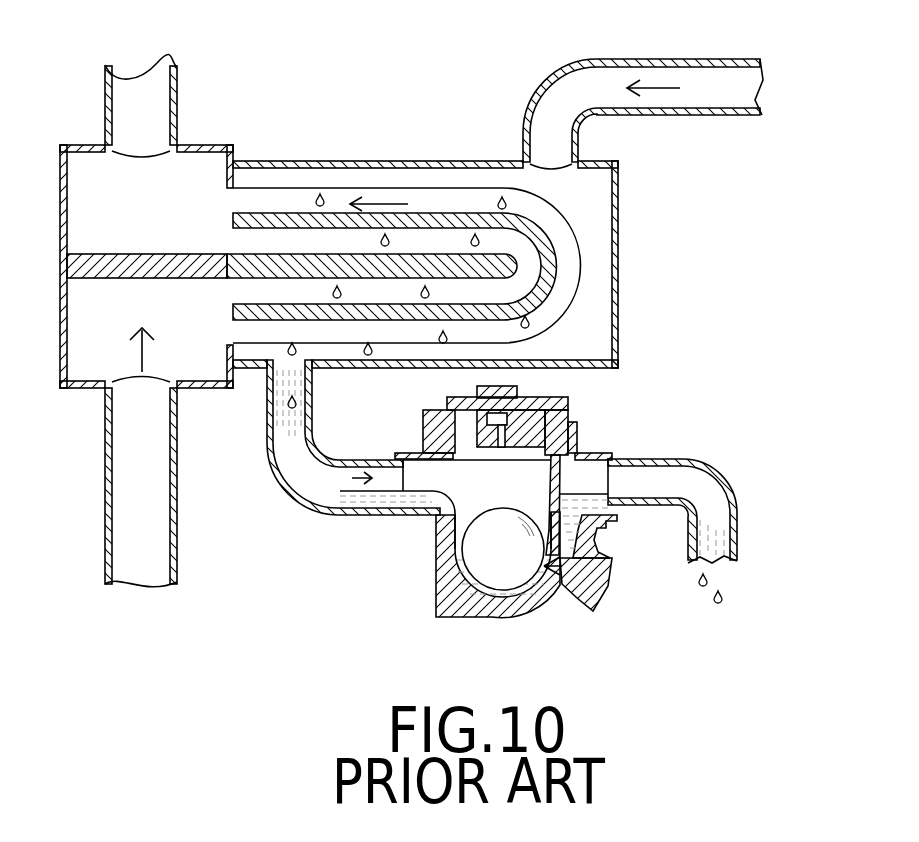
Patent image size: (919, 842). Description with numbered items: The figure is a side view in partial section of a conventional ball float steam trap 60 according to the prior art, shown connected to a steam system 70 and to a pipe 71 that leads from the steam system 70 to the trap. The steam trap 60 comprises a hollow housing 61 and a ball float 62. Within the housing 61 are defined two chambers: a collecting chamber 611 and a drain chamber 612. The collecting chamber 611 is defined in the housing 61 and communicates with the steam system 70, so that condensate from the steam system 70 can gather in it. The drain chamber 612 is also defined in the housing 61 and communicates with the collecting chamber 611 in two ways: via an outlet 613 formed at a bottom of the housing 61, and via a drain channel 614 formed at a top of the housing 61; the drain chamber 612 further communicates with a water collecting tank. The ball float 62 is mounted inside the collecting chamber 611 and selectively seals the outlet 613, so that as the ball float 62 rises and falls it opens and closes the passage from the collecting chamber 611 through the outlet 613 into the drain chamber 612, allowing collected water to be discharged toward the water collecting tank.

The steam system 70 is at (308, 148).
The drain pipe 71 is at (315, 493).
The ball float steam trap 60 is at (574, 520).
The housing 61 is at (523, 605).
The collecting chamber 611 is at (465, 493).
The ball float 62 is at (485, 567).
The drain chamber 612 is at (582, 515).
The outlet 613 is at (542, 569).
The drain channel 614 is at (553, 418).